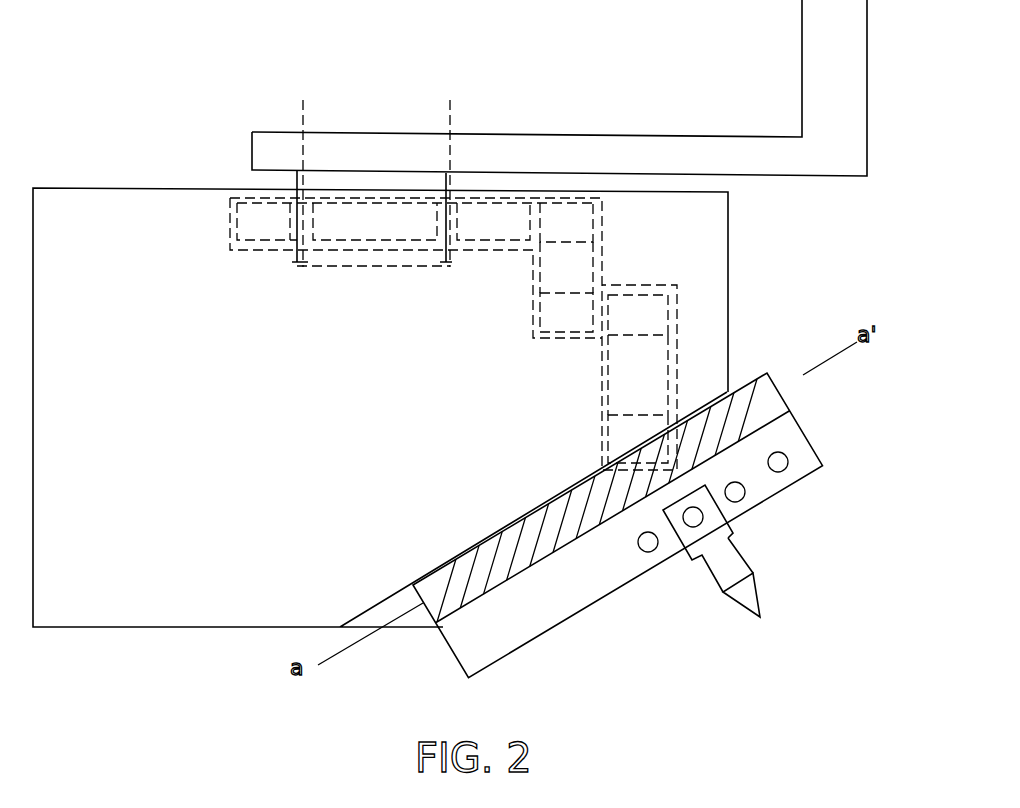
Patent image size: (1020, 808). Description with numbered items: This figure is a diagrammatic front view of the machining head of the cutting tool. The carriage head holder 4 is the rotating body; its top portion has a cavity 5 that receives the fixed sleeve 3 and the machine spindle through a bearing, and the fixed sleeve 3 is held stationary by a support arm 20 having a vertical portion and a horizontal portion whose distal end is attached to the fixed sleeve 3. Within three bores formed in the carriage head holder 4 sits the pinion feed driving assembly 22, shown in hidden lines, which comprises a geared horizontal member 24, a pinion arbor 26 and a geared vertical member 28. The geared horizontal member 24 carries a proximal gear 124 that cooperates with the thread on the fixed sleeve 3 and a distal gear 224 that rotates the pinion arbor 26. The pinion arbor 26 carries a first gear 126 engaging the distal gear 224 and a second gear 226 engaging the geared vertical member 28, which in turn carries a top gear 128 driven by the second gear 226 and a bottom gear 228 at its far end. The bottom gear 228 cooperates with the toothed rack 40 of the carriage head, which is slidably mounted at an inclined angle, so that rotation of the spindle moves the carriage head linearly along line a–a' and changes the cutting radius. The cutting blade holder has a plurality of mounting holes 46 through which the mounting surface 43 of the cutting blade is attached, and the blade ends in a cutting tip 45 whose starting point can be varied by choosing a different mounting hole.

The fixed sleeve 3 is at (297, 172).
The carriage head holder 4 is at (78, 197).
The cavity 5 is at (292, 190).
The support arm 20 is at (808, 23).
The pinion feed driving assembly 22 is at (440, 290).
The geared horizontal member 24 is at (485, 232).
The pinion arbor 26 is at (557, 268).
The geared vertical member 28 is at (618, 366).
The proximal gear 124 is at (370, 215).
The distal gear 224 is at (533, 203).
The first gear 126 is at (583, 221).
The second gear 226 is at (568, 312).
The top gear 128 is at (658, 315).
The bottom gear 228 is at (642, 425).
The toothed rack 40 is at (760, 407).
The mounting surface 43 is at (730, 557).
The cutting tip 45 is at (762, 610).
The mounting holes 46 is at (784, 470).